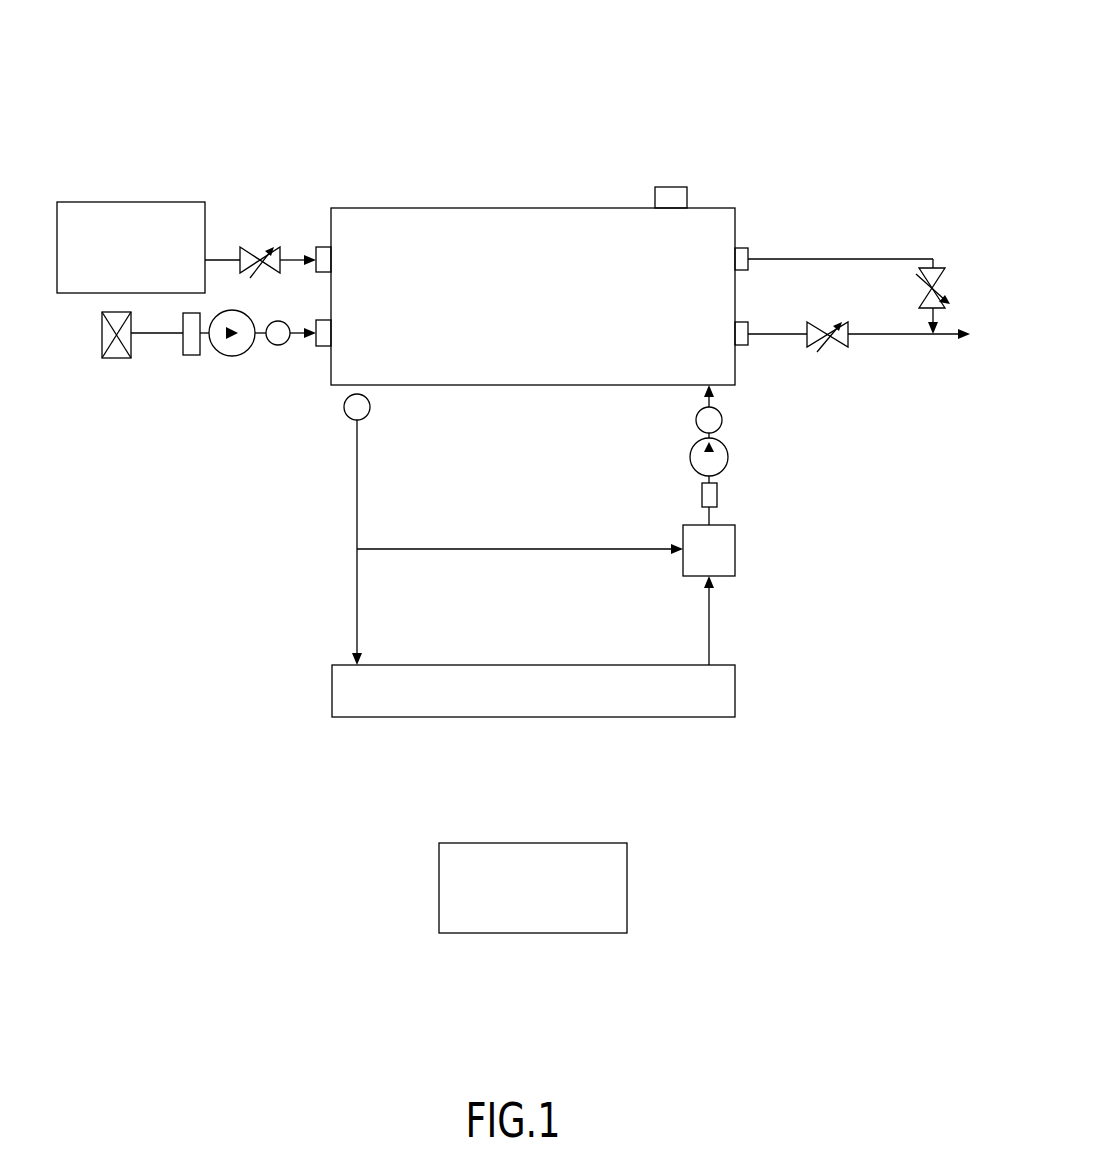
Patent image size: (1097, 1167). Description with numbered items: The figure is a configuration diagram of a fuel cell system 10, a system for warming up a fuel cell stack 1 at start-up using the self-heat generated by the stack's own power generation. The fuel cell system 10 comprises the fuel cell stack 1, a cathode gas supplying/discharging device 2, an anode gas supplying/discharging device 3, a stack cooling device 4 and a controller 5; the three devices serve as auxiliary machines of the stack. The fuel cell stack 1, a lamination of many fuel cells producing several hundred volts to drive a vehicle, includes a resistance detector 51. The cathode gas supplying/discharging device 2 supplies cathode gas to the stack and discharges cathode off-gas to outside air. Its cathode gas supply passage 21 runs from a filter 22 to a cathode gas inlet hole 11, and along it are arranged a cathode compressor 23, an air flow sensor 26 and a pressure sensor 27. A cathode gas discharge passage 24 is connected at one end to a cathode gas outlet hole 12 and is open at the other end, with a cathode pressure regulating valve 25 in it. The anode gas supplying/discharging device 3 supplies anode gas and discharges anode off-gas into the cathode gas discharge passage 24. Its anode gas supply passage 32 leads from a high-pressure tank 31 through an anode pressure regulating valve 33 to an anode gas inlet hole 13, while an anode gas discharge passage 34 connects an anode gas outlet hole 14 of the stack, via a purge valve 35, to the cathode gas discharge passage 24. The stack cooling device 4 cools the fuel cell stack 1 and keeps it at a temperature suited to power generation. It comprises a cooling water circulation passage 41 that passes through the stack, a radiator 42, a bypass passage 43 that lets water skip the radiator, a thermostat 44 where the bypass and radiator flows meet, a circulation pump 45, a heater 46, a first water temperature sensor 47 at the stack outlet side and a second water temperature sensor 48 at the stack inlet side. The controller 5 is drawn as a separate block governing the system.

The fuel cell system 10 is at (198, 94).
The fuel cell stack 1 is at (503, 208).
The cathode gas supplying/discharging device 2 is at (255, 369).
The anode gas supplying/discharging device 3 is at (286, 208).
The stack cooling device 4 is at (310, 573).
The controller 5 is at (505, 933).
The cathode gas inlet hole 11 is at (322, 346).
The cathode gas outlet hole 12 is at (748, 345).
The anode gas inlet hole 13 is at (321, 247).
The anode gas outlet hole 14 is at (748, 248).
The cathode gas supply passage 21 is at (158, 334).
The filter 22 is at (113, 358).
The cathode compressor 23 is at (248, 314).
The cathode gas discharge passage 24 is at (900, 338).
The cathode pressure regulating valve 25 is at (832, 347).
The air flow sensor 26 is at (190, 355).
The pressure sensor 27 is at (276, 346).
The high-pressure tank 31 is at (152, 202).
The anode gas supply passage 32 is at (213, 258).
The anode pressure regulating valve 33 is at (257, 249).
The anode gas discharge passage 34 is at (838, 259).
The purge valve 35 is at (938, 268).
The cooling water circulation passage 41 is at (357, 495).
The radiator 42 is at (470, 718).
The bypass passage 43 is at (537, 549).
The thermostat 44 is at (736, 545).
The circulation pump 45 is at (729, 457).
The heater 46 is at (718, 495).
The first water temperature sensor 47 is at (370, 407).
The second water temperature sensor 48 is at (695, 420).
The resistance detector 51 is at (673, 187).